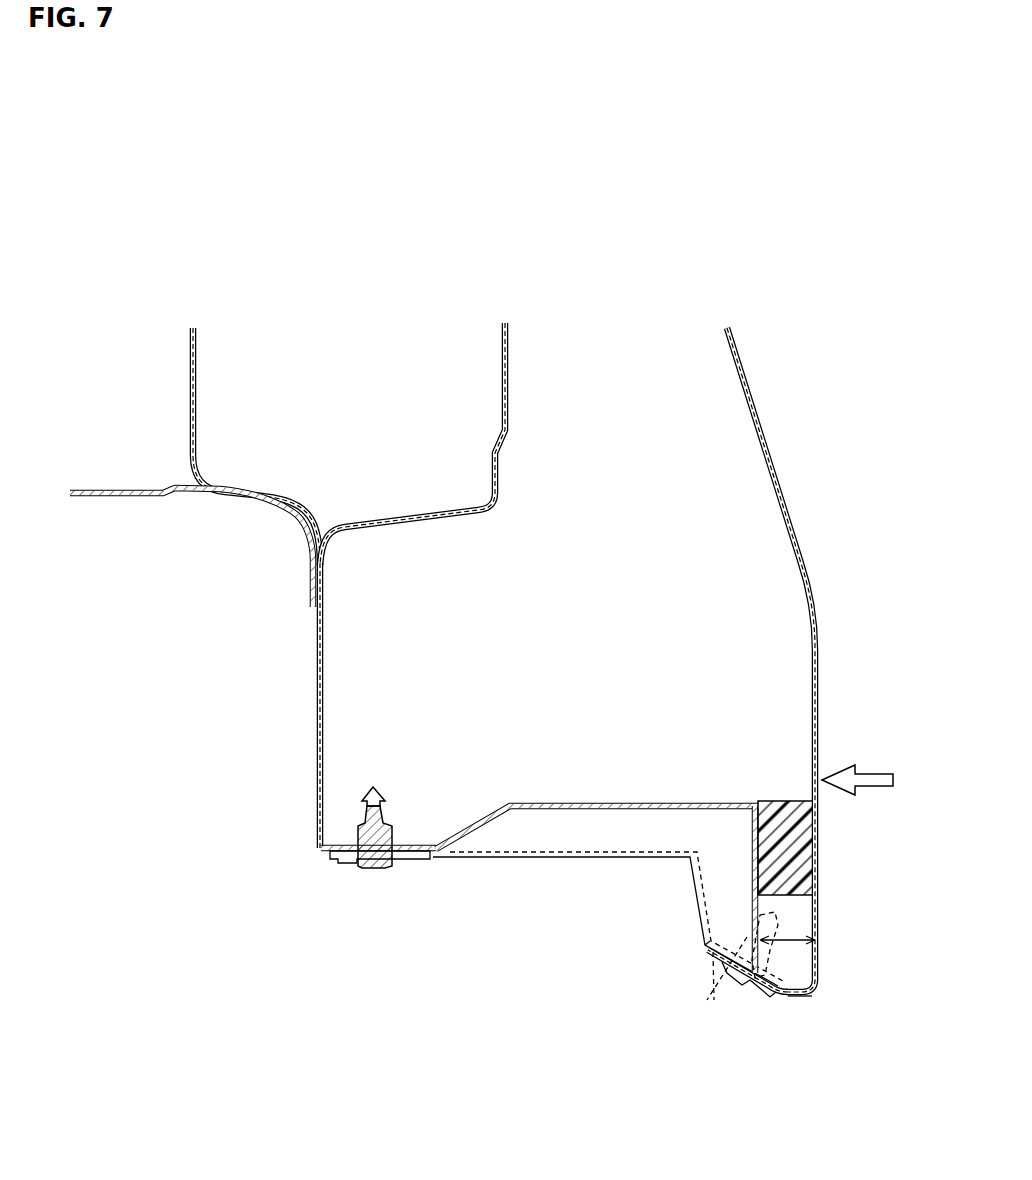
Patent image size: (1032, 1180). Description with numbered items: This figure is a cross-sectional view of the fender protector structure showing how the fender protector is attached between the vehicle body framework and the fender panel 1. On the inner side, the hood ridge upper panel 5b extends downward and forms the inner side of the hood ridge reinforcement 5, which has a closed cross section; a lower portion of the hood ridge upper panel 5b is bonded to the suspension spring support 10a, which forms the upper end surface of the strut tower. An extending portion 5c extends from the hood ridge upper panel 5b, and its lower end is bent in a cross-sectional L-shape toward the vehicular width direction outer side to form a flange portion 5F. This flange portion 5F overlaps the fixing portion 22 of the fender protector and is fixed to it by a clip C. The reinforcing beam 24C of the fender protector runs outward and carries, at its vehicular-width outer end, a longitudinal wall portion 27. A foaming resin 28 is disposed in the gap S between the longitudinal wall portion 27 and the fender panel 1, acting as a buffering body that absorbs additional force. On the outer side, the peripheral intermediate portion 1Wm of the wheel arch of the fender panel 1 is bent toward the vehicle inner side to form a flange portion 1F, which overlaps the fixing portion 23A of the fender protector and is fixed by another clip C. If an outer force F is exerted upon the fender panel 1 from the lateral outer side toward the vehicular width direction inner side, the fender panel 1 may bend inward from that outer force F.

The fender panel 1 is at (798, 511).
The flange portion 1F is at (703, 954).
The peripheral intermediate portion 1Wm is at (810, 997).
The hood ridge reinforcement 5 is at (525, 369).
The hood ridge upper panel 5b is at (190, 368).
The extending portion 5c is at (318, 697).
The flange portion 5F is at (412, 845).
The suspension spring support 10a is at (121, 488).
The fixing portion 22 is at (418, 862).
The fixing portion 23A is at (707, 1000).
The reinforcing beam 24C is at (515, 803).
The longitudinal wall portion 27 is at (770, 820).
The foaming resin 28 is at (819, 847).
The clip C is at (372, 869).
The gap S is at (787, 952).
The outer force F is at (870, 779).